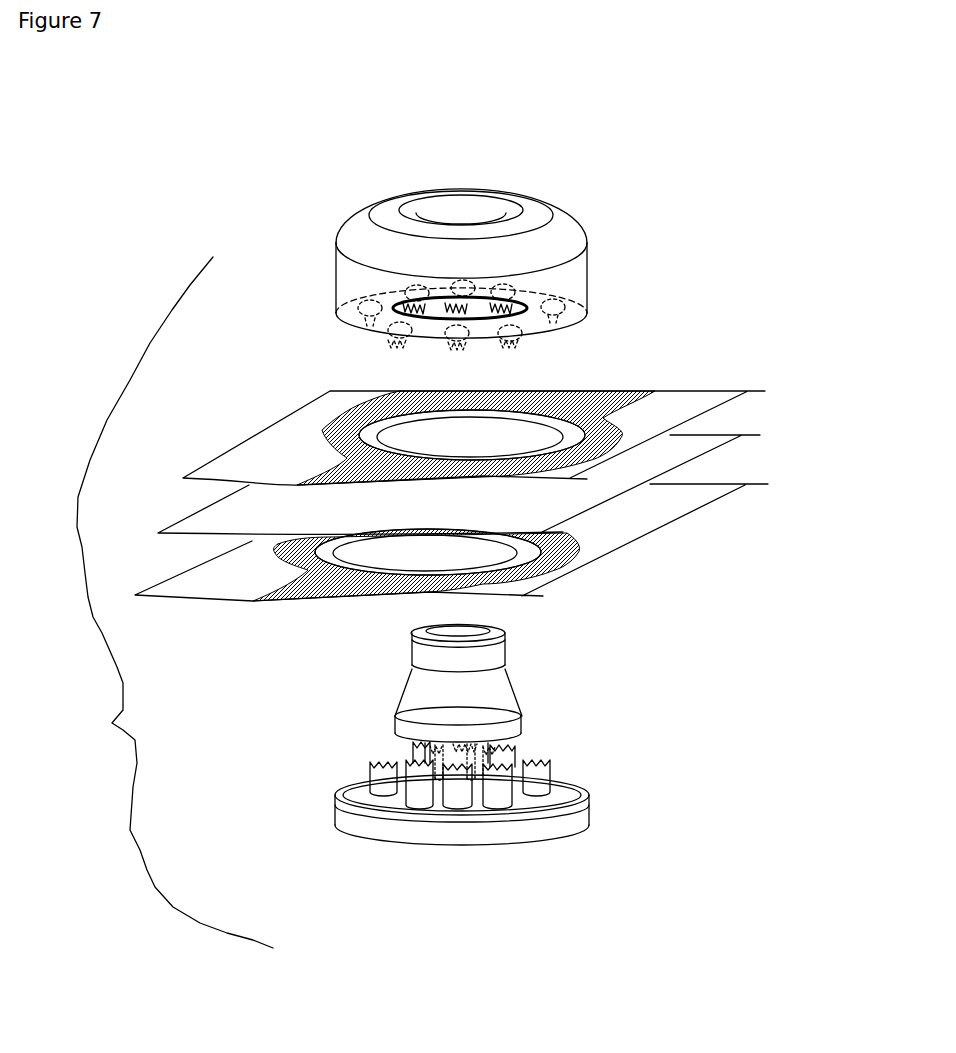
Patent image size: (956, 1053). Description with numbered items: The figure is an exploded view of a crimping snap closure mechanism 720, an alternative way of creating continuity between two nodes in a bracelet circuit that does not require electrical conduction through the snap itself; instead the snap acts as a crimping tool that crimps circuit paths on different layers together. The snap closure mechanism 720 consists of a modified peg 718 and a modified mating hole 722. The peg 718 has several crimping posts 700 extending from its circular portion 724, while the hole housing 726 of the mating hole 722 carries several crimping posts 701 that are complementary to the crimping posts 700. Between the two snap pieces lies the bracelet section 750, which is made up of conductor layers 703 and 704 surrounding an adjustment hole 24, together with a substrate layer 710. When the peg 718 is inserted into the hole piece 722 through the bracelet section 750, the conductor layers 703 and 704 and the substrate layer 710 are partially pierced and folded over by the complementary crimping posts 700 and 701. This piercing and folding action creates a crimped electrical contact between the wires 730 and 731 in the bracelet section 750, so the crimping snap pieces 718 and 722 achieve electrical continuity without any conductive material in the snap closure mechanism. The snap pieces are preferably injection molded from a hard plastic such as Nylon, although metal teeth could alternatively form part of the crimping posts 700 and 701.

The adjustment hole 24 is at (459, 448).
The crimping posts 700 is at (452, 793).
The crimping posts 701 is at (440, 346).
The conductor layer 703 is at (185, 578).
The conductor layer 704 is at (243, 467).
The substrate layer 710 is at (200, 525).
The peg 718 is at (525, 687).
The snap closure mechanism 720 is at (169, 602).
The mating hole 722 is at (603, 308).
The circular portion 724 is at (570, 792).
The hole housing 726 is at (577, 275).
The wire 730 is at (638, 388).
The wire 731 is at (323, 597).
The bracelet section 750 is at (472, 499).